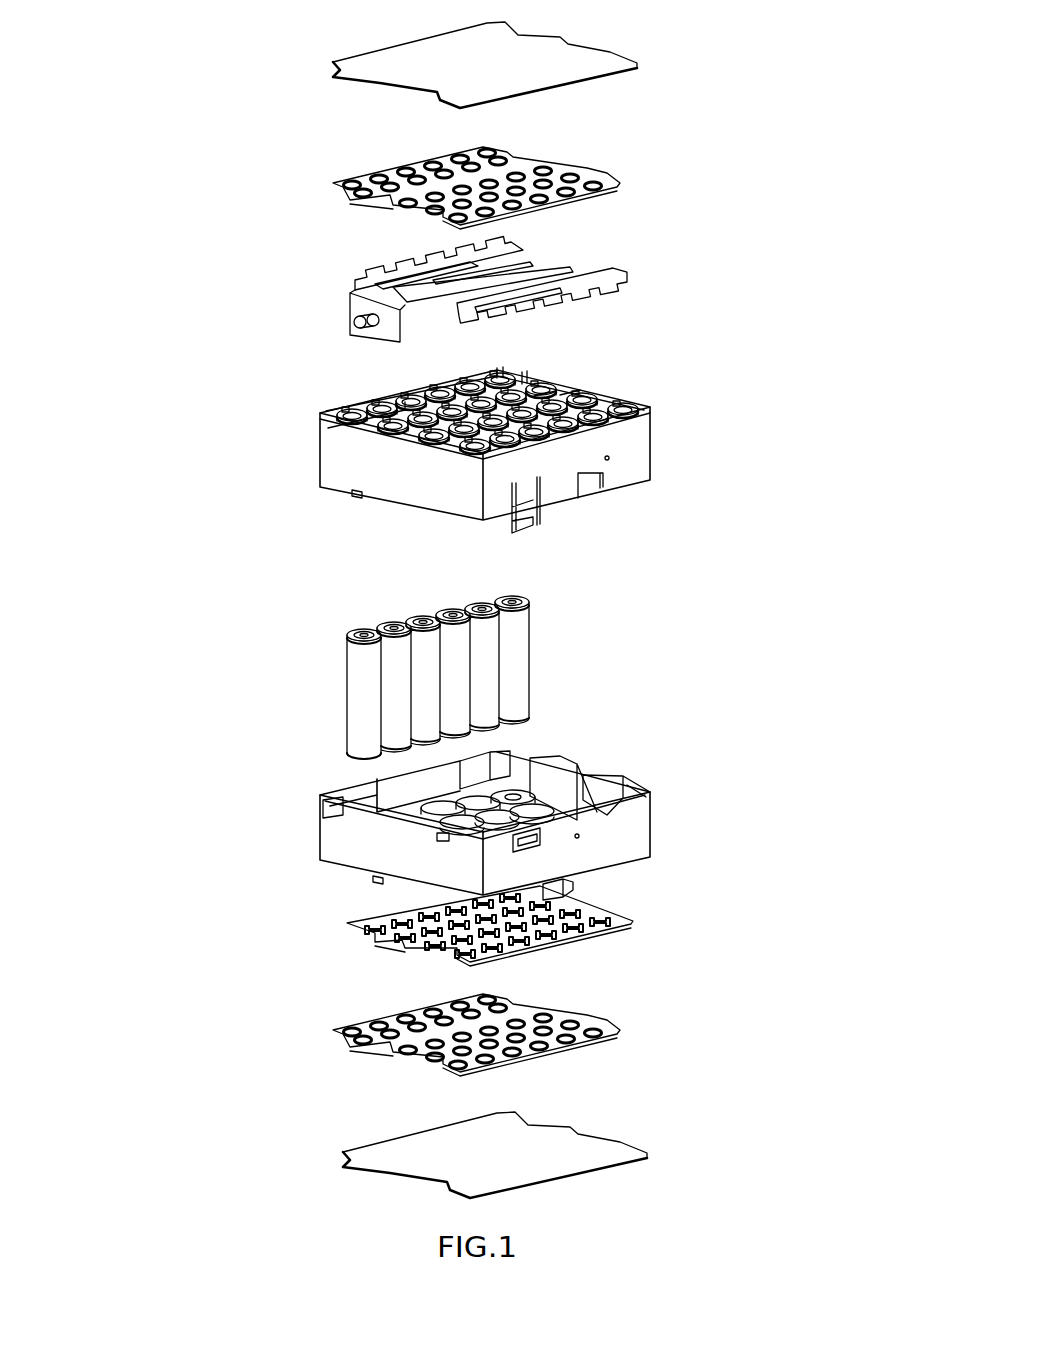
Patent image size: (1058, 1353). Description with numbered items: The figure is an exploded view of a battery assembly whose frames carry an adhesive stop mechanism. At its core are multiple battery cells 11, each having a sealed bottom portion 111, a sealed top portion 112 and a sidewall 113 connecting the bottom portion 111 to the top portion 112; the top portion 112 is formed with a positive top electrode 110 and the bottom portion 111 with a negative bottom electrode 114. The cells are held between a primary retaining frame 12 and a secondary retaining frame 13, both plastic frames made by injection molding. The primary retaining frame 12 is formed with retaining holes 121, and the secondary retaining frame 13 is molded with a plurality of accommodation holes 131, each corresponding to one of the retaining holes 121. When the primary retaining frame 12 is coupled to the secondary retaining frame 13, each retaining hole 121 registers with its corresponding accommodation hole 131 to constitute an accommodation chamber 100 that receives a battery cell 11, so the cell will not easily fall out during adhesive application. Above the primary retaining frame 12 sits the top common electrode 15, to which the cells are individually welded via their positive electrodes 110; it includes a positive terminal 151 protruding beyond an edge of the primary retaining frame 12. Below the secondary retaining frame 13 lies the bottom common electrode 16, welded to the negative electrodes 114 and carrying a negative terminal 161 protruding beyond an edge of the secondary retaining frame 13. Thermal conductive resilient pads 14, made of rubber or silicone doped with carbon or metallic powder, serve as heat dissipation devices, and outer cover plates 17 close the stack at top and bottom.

The accommodation chamber 100 is at (717, 615).
The battery cell 11 is at (323, 677).
The positive top electrode 110 is at (356, 628).
The bottom portion 111 is at (343, 752).
The top portion 112 is at (347, 635).
The sidewall 113 is at (347, 692).
The negative bottom electrode 114 is at (352, 766).
The primary retaining frame 12 is at (443, 505).
The retaining hole 121 is at (563, 427).
The secondary retaining frame 13 is at (439, 827).
The accommodation hole 131 is at (533, 803).
The thermal conductive resilient pad 14 is at (610, 170).
The top common electrode 15 is at (490, 275).
The positive terminal 151 is at (350, 302).
The bottom common electrode 16 is at (547, 901).
The negative terminal 161 is at (575, 886).
The cover plate 17 is at (600, 52).